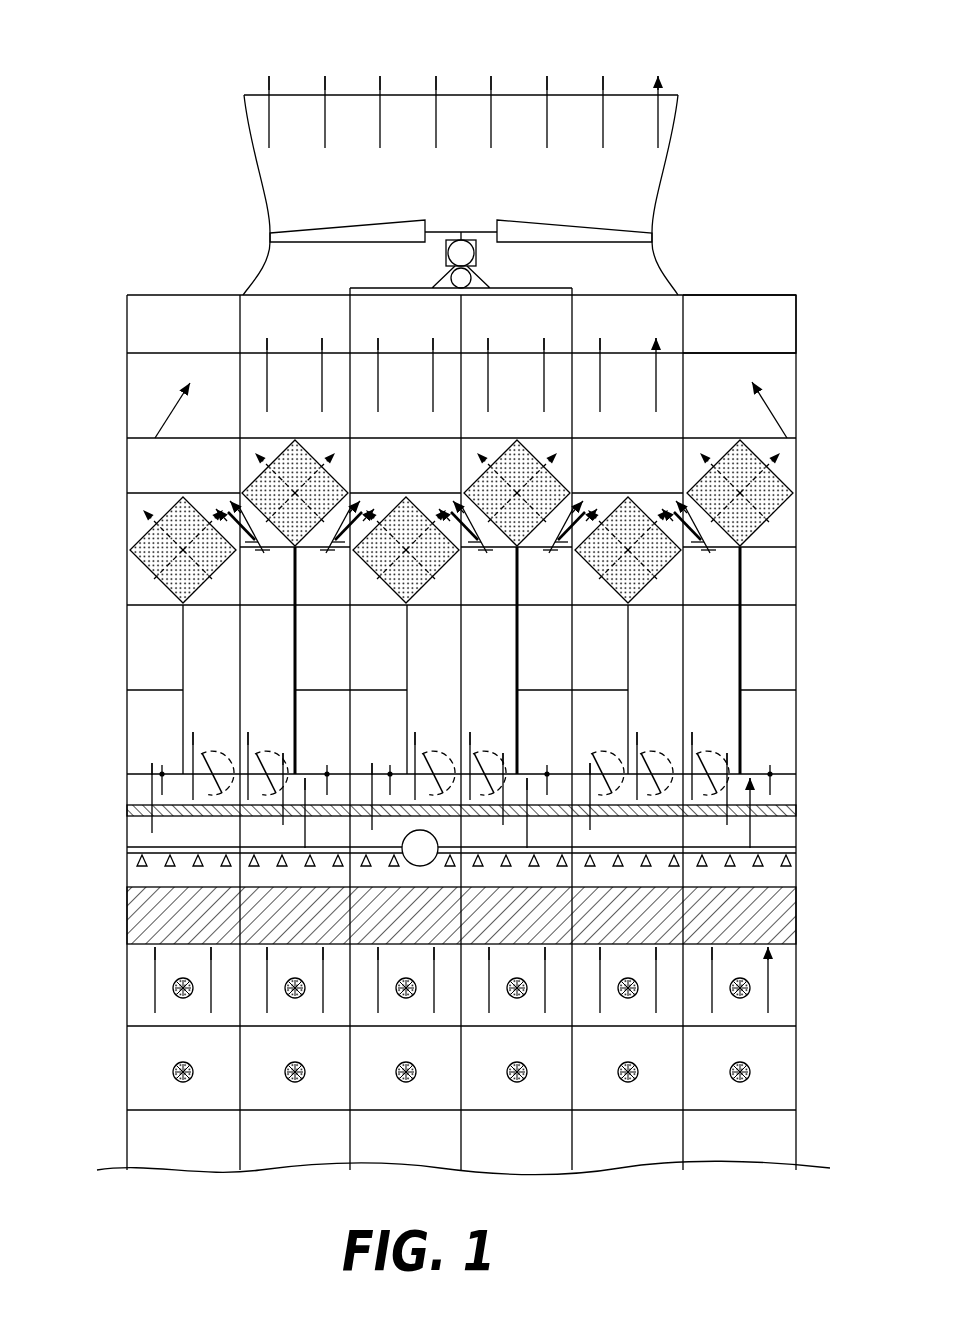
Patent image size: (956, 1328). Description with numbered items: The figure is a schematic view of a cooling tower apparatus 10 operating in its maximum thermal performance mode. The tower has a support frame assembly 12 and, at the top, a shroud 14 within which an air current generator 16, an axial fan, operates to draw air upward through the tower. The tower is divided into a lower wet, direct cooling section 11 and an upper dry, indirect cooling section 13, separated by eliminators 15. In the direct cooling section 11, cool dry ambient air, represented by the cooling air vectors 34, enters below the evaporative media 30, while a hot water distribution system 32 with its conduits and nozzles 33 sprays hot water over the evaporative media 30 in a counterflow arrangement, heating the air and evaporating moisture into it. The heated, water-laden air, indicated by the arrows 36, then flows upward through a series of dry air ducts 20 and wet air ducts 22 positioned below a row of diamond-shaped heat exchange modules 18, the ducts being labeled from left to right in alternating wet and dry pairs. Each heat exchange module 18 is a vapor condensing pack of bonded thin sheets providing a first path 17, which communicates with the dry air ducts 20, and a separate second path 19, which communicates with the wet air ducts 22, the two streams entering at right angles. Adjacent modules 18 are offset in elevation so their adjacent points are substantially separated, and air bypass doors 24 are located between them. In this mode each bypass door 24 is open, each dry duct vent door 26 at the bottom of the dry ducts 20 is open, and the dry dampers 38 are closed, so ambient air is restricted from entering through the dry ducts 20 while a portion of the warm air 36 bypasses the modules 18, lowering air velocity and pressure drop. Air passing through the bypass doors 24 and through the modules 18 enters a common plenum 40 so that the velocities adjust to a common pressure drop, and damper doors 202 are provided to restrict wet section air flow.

The cooling tower apparatus 10 is at (700, 52).
The direct cooling section 11 is at (112, 1043).
The support frame assembly 12 is at (748, 295).
The indirect cooling section 13 is at (82, 628).
The shroud 14 is at (678, 143).
The eliminators 15 is at (796, 808).
The air current generator 16 is at (532, 222).
The first path 17 is at (140, 505).
The heat exchange modules 18 is at (168, 507).
The second path 19 is at (263, 460).
The dry air ducts 20 is at (201, 660).
The wet air ducts 22 is at (165, 663).
The air bypass doors 24 is at (668, 505).
The dry duct vent doors 26 is at (218, 780).
The evaporative media 30 is at (796, 887).
The hot water distribution system 32 is at (796, 842).
The nozzles 33 is at (140, 868).
The cooling air vectors 34 is at (170, 988).
The arrows 36 is at (150, 765).
The dry dampers 38 is at (735, 670).
The common plenum 40 is at (765, 318).
The damper doors 202 is at (162, 772).